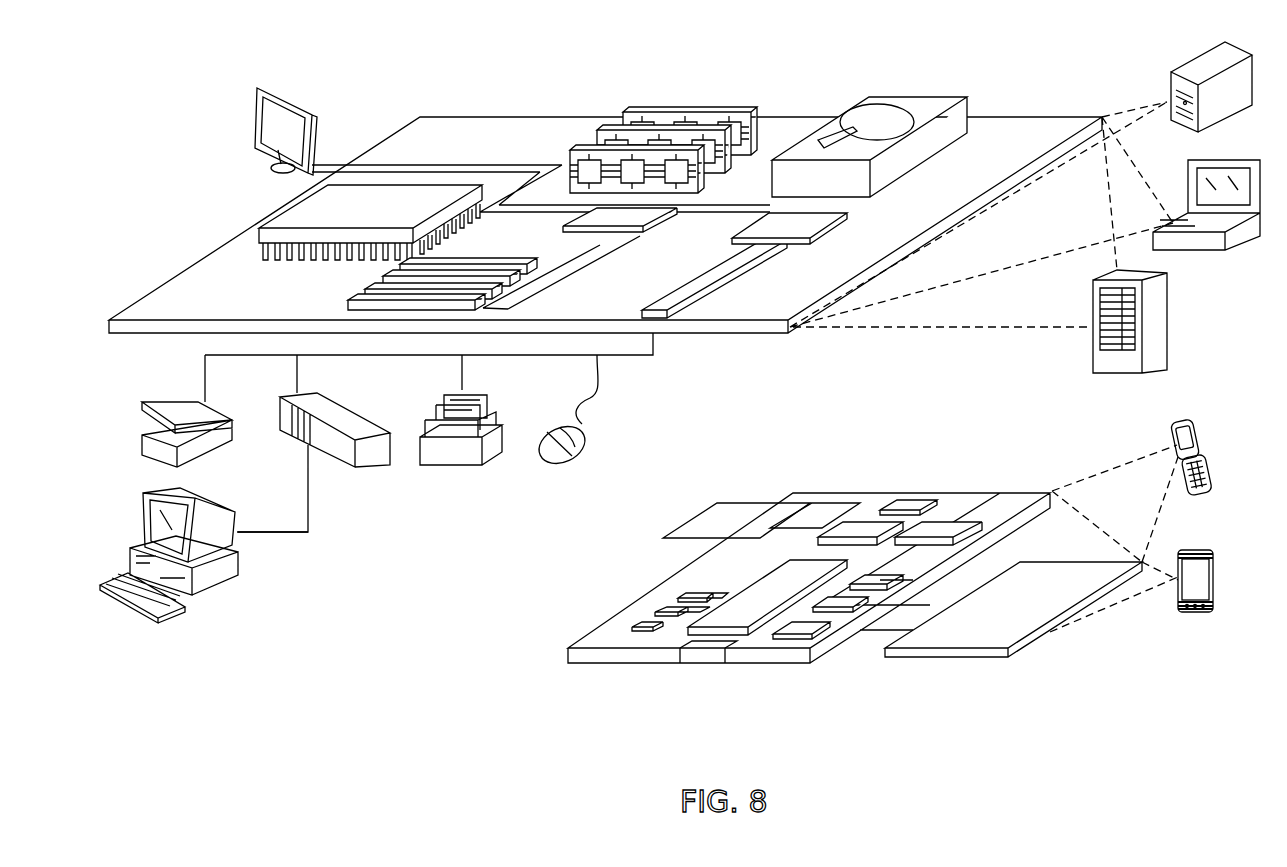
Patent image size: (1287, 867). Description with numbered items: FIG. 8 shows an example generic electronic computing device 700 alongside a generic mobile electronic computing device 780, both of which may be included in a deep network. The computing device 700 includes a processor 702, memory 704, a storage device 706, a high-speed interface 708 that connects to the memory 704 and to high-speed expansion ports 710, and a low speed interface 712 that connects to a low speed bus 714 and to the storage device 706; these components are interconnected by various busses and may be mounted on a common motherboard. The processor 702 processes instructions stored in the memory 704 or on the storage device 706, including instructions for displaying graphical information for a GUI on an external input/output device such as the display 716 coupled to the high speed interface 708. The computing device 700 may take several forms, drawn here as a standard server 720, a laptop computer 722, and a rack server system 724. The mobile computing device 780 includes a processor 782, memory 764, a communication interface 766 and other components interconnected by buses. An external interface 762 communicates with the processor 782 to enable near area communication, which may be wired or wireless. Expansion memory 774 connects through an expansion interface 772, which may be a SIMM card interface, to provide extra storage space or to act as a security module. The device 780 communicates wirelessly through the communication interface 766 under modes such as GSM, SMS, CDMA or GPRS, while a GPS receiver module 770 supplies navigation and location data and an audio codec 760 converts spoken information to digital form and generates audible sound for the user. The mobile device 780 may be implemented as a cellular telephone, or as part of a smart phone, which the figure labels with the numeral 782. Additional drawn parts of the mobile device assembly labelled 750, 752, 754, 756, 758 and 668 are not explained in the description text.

The computing device 700 is at (373, 64).
The processor 702 is at (276, 211).
The memory 704 is at (695, 112).
The storage device 706 is at (910, 100).
The high-speed interface 708 is at (633, 230).
The high-speed expansion ports 710 is at (371, 283).
The low speed interface 712 is at (765, 221).
The low speed bus 714 is at (660, 306).
The display 716 is at (258, 88).
The standard server 720 is at (1191, 70).
The laptop computer 722 is at (1238, 160).
The rack server system 724 is at (1168, 320).
The mobile computing device 750 is at (515, 678).
The battery 752 is at (742, 600).
The housing 754 is at (1048, 568).
The integrated circuit chip 756 is at (815, 628).
The integrated circuit chip 758 is at (870, 605).
The audio codec 760 is at (884, 573).
The external interface 762 is at (704, 663).
The memory 764 is at (652, 608).
The communication interface 766 is at (862, 522).
The memory chip 668 is at (945, 522).
The GPS receiver module 770 is at (910, 500).
The expansion interface 772 is at (790, 503).
The expansion memory 774 is at (716, 503).
The mobile computing device 780 is at (1183, 422).
The processor 782 is at (1190, 550).